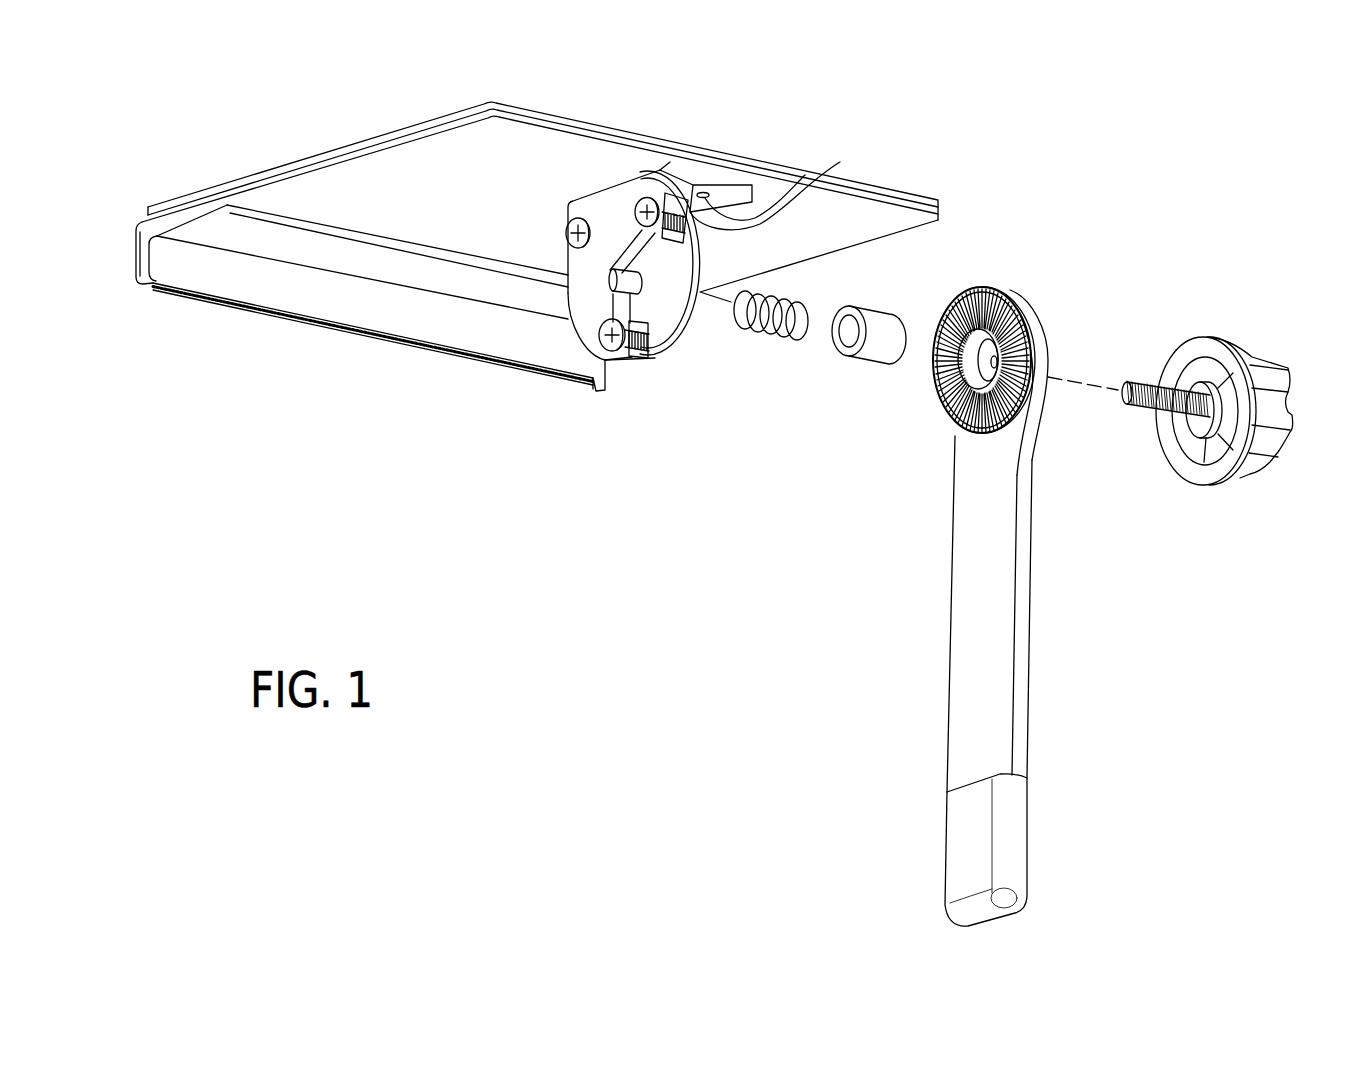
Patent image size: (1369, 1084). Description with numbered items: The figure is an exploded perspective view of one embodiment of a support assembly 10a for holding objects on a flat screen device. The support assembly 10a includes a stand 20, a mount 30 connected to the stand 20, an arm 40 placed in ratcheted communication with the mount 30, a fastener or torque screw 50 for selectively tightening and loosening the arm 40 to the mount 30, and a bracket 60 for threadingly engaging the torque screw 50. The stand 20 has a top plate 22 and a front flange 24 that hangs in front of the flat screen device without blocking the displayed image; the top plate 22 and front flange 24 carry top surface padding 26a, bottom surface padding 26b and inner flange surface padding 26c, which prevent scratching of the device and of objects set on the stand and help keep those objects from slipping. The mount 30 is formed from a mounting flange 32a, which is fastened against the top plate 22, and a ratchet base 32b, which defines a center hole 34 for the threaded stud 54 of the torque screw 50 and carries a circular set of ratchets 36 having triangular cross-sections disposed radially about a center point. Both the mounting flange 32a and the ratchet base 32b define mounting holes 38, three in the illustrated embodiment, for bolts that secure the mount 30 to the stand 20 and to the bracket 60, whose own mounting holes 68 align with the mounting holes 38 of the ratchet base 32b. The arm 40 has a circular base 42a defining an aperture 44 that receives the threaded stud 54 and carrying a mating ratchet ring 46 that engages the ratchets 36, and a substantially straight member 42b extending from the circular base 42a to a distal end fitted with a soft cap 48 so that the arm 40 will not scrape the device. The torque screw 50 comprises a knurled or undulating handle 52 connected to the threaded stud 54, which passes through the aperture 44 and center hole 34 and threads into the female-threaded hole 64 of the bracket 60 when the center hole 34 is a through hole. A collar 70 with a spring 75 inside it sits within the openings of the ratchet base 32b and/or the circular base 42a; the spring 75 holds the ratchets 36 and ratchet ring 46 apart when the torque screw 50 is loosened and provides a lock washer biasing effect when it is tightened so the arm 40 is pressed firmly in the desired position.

The support assembly 10a is at (388, 512).
The stand 20 is at (121, 221).
The top plate 22 is at (938, 221).
The front flange 24 is at (132, 284).
The top surface padding 26a is at (287, 161).
The bottom surface padding 26b is at (383, 263).
The inner flange surface padding 26c is at (292, 298).
The mount 30 is at (748, 172).
The mounting flange 32a is at (710, 174).
The ratchet base 32b is at (648, 352).
The center hole 34 is at (568, 260).
The ratchets 36 is at (698, 296).
The mounting holes 38 is at (805, 175).
The arm 40 is at (1026, 283).
The circular base 42a is at (1040, 343).
The member 42b is at (1022, 598).
The aperture 44 is at (970, 370).
The ratchet ring 46 is at (947, 407).
The soft cap 48 is at (1015, 833).
The torque screw 50 is at (1286, 362).
The handle 52 is at (1288, 450).
The threaded stud 54 is at (1130, 395).
The bracket 60 is at (589, 343).
The hole 64 is at (518, 384).
The mounting holes 68 is at (585, 218).
The collar 70 is at (881, 313).
The spring 75 is at (783, 338).